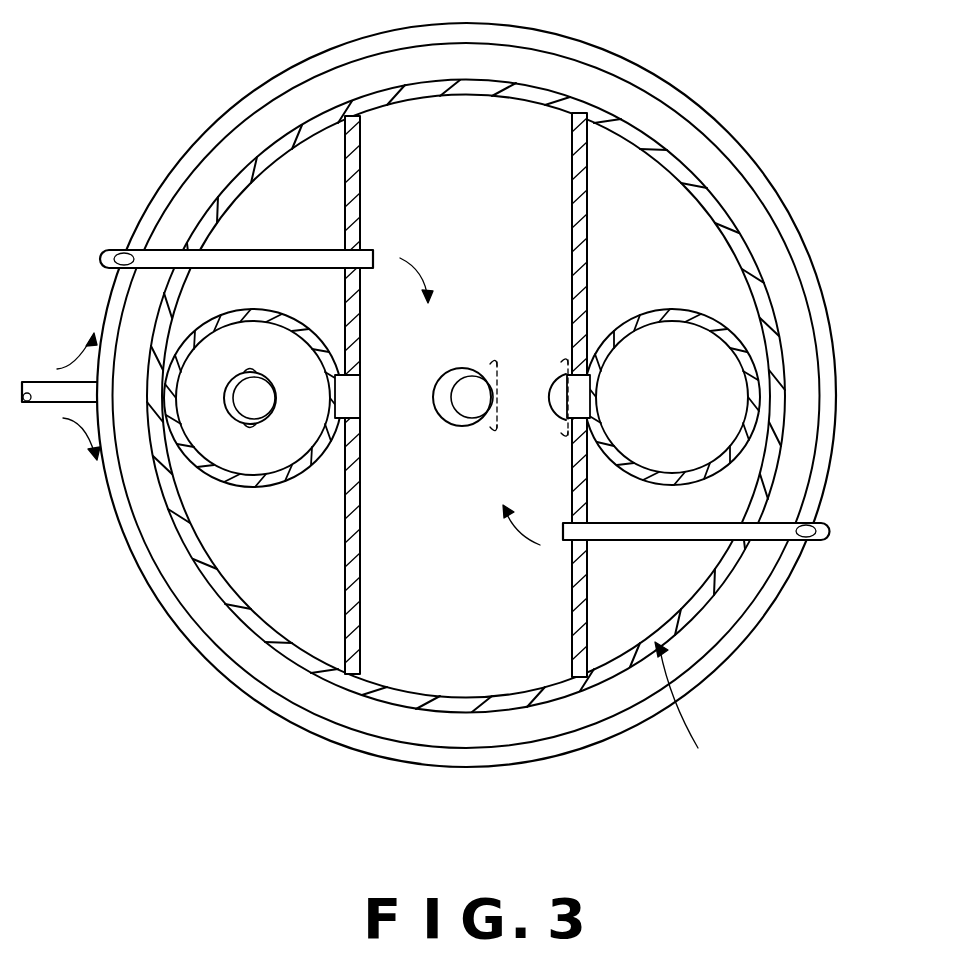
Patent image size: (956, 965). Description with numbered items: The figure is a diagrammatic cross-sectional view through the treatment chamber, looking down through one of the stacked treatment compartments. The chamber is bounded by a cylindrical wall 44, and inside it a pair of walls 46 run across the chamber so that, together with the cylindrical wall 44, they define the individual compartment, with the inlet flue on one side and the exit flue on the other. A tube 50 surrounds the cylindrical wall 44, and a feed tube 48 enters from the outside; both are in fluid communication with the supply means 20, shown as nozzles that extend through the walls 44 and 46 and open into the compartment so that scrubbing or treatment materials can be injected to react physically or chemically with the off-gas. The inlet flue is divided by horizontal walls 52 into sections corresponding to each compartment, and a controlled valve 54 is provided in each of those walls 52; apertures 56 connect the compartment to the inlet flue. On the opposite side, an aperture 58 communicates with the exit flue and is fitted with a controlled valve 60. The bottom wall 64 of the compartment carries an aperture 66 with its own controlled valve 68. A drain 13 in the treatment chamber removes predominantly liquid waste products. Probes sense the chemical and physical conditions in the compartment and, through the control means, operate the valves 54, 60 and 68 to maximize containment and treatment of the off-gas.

The drain 13 is at (689, 719).
The supply means 20 is at (240, 248).
The cylindrical wall 44 is at (700, 173).
The walls 46 is at (343, 191).
The feed tube 48 is at (40, 402).
The tube 50 is at (745, 627).
The horizontal walls 52 is at (253, 398).
The controlled valves 54 is at (250, 405).
The apertures 56 is at (360, 397).
The aperture 58 is at (567, 383).
The controlled valve 60 is at (549, 410).
The bottom walls 64 is at (515, 592).
The apertures 66 is at (447, 375).
The controlled valves 68 is at (472, 405).